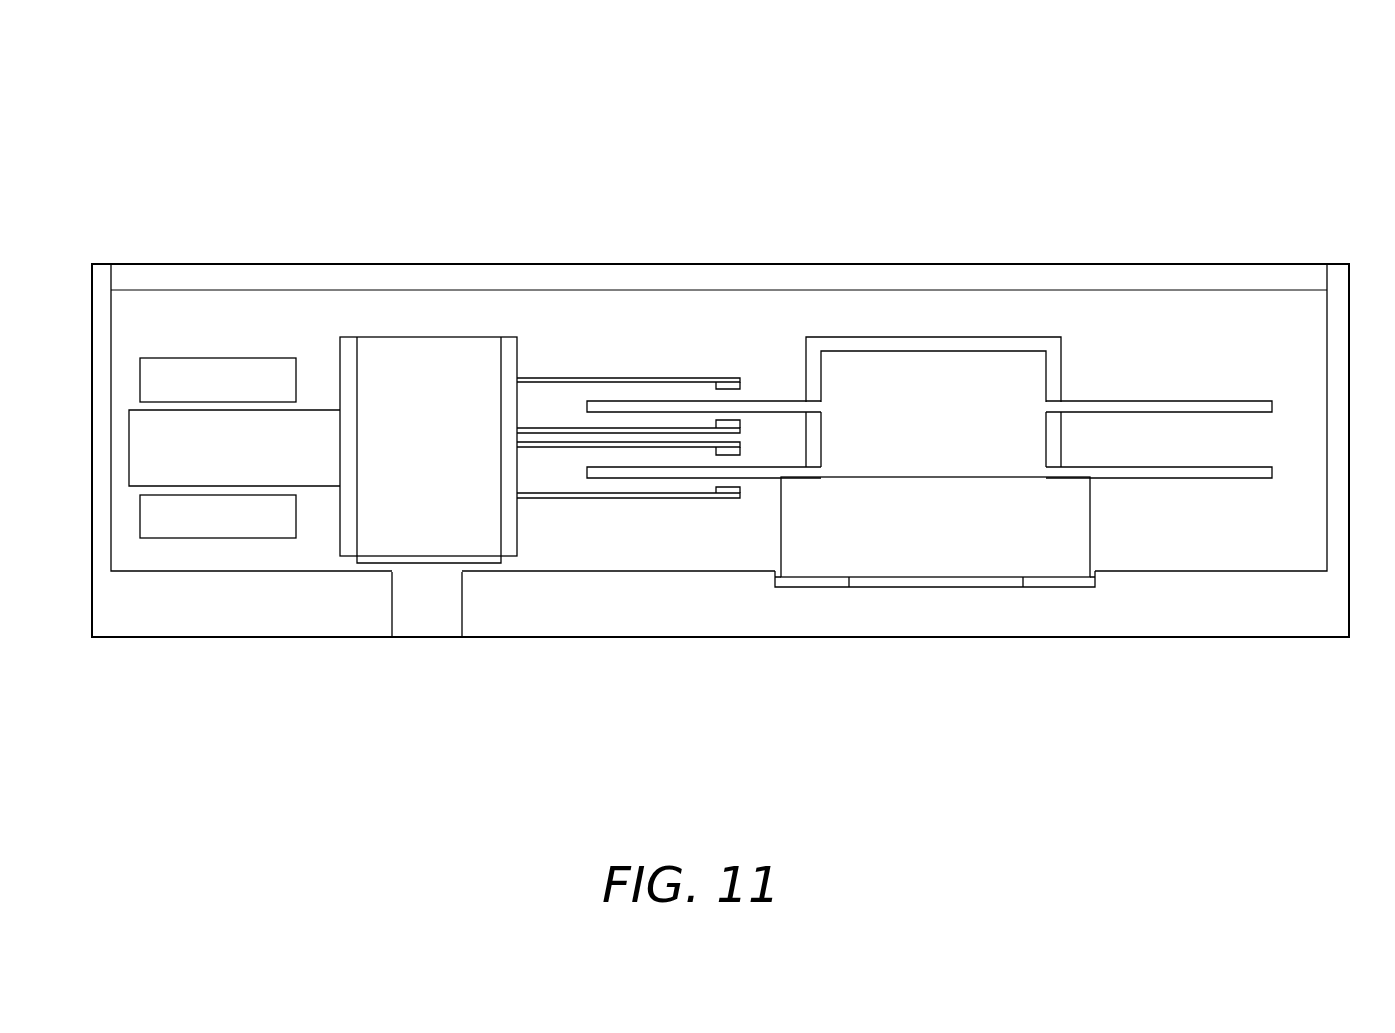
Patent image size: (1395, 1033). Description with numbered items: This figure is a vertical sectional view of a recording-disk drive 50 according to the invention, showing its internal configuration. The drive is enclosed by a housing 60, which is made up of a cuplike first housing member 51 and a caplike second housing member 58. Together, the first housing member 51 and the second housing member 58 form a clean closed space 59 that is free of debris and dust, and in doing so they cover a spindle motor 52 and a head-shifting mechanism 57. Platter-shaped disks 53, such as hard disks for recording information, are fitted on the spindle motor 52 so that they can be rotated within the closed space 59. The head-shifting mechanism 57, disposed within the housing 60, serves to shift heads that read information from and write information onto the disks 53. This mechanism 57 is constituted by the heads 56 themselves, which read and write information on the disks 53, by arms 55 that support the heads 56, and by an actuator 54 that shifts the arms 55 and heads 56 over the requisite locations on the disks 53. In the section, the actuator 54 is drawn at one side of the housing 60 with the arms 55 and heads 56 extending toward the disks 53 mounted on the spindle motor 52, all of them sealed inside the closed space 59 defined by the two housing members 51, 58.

The recording-disk drive 50 is at (785, 68).
The first housing member 51 is at (1130, 595).
The spindle motor 52 is at (882, 392).
The disks 53 is at (1197, 467).
The actuator 54 is at (425, 395).
The arms 55 is at (578, 380).
The heads 56 is at (735, 386).
The head-shifting mechanism 57 is at (432, 325).
The second housing member 58 is at (198, 277).
The closed space 59 is at (1203, 378).
The housing 60 is at (1206, 243).